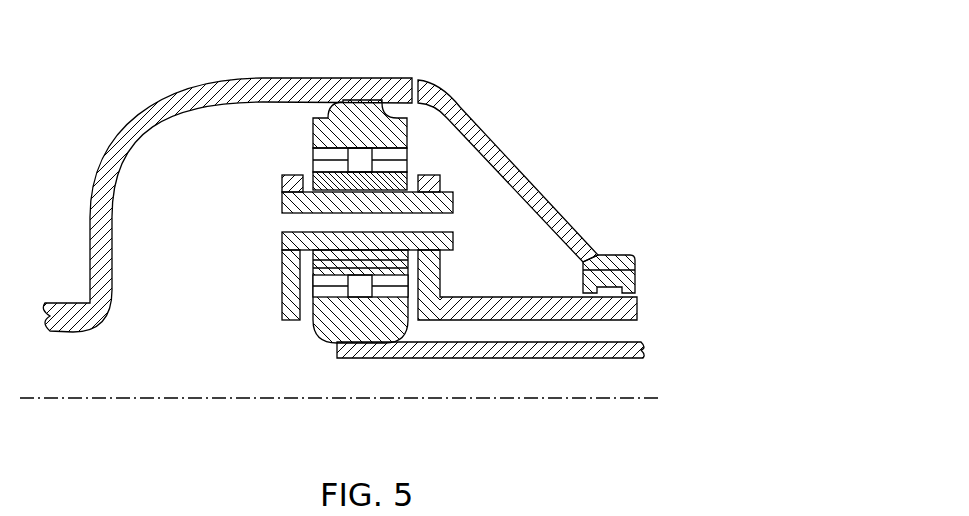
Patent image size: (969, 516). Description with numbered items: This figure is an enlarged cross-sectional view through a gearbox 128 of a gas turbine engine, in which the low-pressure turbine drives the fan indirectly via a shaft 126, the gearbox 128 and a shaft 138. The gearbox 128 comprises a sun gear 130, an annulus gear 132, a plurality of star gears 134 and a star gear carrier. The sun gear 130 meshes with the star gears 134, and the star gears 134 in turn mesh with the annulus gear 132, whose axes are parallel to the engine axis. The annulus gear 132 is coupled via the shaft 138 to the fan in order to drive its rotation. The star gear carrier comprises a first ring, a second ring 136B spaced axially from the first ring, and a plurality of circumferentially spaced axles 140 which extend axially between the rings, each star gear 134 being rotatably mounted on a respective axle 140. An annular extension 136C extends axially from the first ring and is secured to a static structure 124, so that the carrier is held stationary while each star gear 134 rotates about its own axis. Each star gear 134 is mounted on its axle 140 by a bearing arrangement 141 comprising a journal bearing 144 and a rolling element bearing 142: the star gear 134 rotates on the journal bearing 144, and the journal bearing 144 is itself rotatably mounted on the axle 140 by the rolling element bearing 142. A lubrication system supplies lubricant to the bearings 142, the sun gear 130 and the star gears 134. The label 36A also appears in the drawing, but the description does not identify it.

The shaft 138 is at (394, 77).
The static structure 124 is at (455, 98).
The annular extension 136C is at (542, 297).
The annulus gear 132 is at (322, 126).
The star gear 134 is at (403, 152).
The axle 140 is at (283, 195).
The bearing arrangement 141 is at (437, 178).
The rolling element bearing 142 is at (283, 233).
The second ring 136B is at (283, 280).
The sun gear 130 is at (318, 320).
The bracket 36A is at (443, 278).
The journal bearing 144 is at (392, 360).
The shaft 126 is at (537, 352).
The gearbox 128 is at (260, 333).